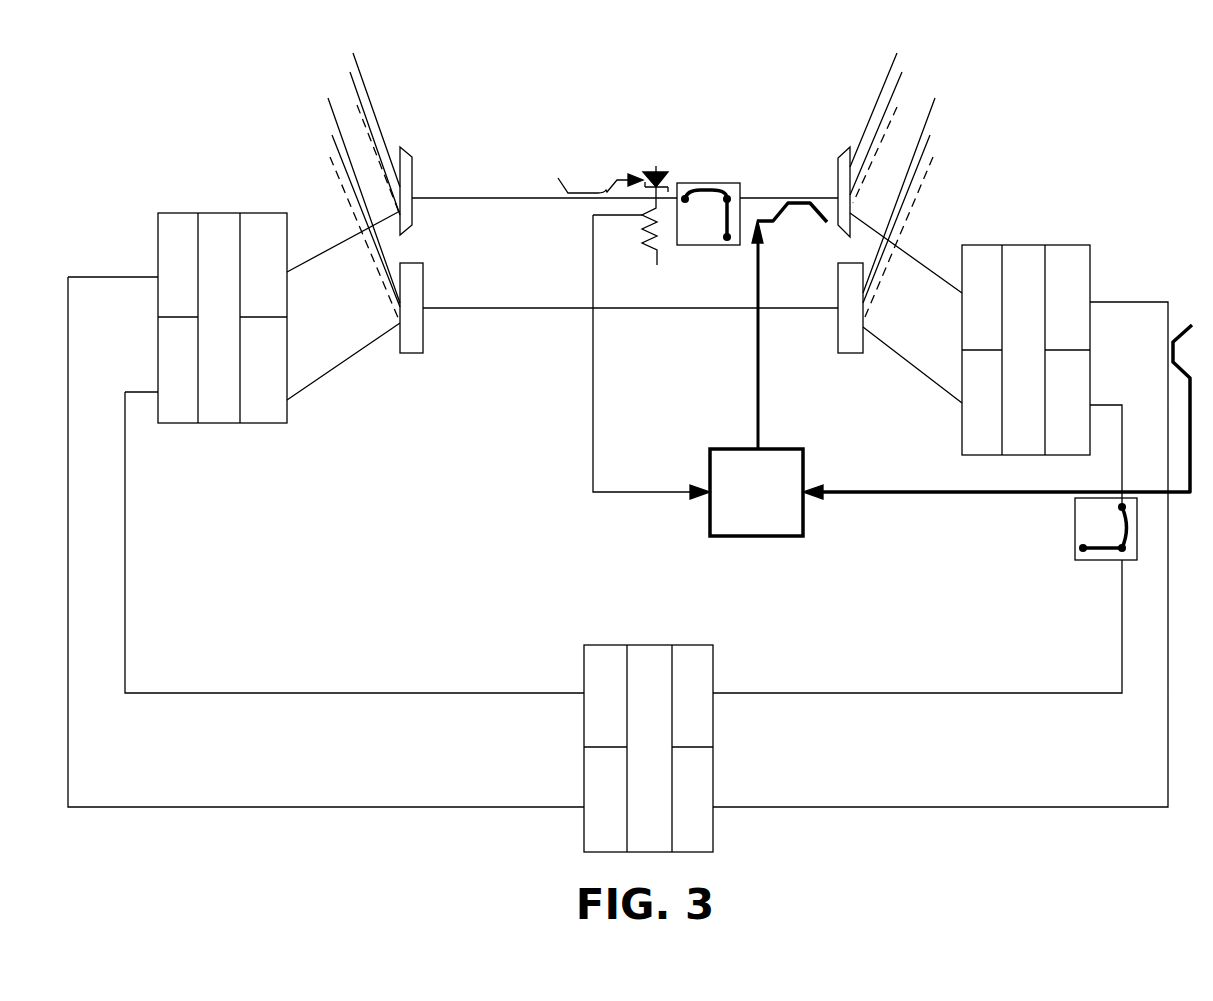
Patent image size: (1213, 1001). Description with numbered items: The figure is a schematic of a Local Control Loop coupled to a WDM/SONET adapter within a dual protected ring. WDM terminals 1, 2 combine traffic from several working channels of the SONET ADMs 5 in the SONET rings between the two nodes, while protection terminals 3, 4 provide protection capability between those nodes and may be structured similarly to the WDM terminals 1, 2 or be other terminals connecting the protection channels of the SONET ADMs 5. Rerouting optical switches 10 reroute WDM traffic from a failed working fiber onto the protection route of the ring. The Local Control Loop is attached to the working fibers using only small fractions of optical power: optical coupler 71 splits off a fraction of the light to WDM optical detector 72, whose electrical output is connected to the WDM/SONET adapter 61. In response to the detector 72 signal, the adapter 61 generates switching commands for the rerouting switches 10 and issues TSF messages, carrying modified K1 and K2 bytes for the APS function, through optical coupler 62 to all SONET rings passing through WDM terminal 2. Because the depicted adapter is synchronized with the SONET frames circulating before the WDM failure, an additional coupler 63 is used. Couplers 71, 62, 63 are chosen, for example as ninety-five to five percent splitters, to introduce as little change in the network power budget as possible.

The WDM terminal 1 is at (412, 190).
The WDM terminal 2 is at (848, 151).
The protection terminal 3 is at (423, 353).
The protection terminal 4 is at (838, 353).
The SONET ADM 5 is at (215, 334).
The rerouting optical switch 10 is at (692, 236).
The WDM/SONET adapter 61 is at (743, 504).
The optical coupler 62 is at (800, 197).
The additional coupler 63 is at (1128, 365).
The optical coupler 71 is at (603, 192).
The WDM optical detector 72 is at (668, 176).